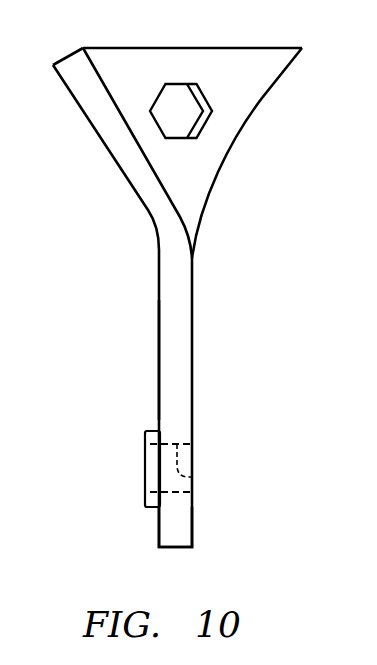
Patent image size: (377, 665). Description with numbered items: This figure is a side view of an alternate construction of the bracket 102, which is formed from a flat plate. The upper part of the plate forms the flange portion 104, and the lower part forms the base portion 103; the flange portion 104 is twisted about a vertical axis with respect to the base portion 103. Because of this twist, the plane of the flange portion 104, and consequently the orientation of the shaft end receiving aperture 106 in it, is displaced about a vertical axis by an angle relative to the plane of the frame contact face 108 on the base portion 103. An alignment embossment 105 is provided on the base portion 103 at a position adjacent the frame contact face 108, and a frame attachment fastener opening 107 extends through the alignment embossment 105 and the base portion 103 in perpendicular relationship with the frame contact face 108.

The bracket 102 is at (193, 380).
The base portion 103 is at (168, 520).
The flange portion 104 is at (232, 70).
The alignment embossment 105 is at (155, 440).
The shaft end receiving aperture 106 is at (211, 113).
The frame attachment fastener opening 107 is at (193, 477).
The frame contact face 108 is at (160, 383).